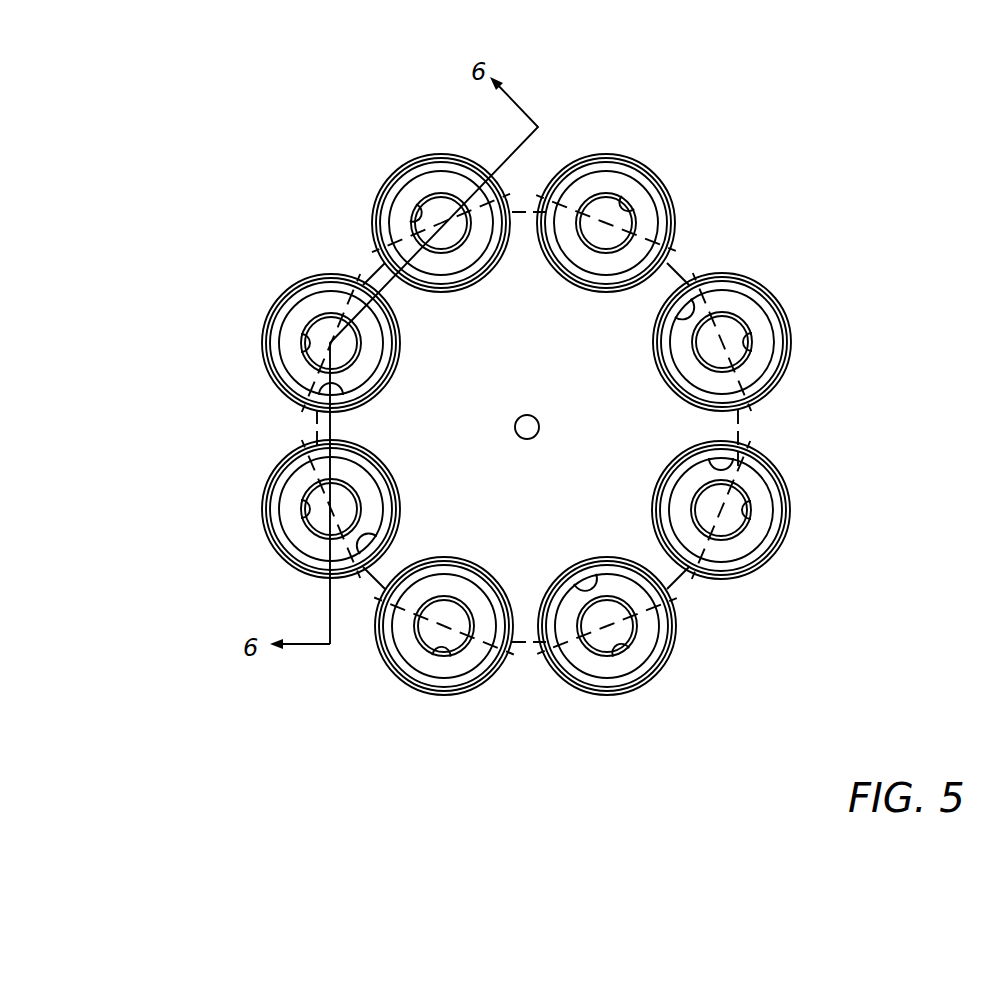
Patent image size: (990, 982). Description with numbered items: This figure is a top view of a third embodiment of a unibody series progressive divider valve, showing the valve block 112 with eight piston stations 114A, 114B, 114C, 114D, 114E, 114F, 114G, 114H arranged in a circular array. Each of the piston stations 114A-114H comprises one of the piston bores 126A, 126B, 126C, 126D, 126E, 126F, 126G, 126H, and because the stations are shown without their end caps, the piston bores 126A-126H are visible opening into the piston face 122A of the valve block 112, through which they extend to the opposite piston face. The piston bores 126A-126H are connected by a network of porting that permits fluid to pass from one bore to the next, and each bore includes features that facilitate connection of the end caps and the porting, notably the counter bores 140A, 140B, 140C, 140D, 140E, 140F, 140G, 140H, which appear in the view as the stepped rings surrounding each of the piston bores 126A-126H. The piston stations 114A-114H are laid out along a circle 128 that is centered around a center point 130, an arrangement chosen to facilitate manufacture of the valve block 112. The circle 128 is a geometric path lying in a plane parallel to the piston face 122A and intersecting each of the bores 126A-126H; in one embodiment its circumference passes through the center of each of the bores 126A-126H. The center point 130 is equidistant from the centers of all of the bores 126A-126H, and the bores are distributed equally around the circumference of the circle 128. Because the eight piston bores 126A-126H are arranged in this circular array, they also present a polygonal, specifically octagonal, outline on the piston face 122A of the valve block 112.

The valve block 112 is at (337, 680).
The piston station 114A is at (282, 566).
The piston station 114B is at (258, 343).
The piston station 114C is at (388, 170).
The piston station 114D is at (665, 177).
The piston station 114E is at (793, 311).
The piston station 114F is at (793, 484).
The piston station 114G is at (685, 633).
The piston station 114H is at (489, 689).
The piston bore 126A is at (315, 528).
The piston bore 126B is at (313, 372).
The piston bore 126C is at (406, 228).
The piston bore 126D is at (627, 207).
The piston bore 126E is at (750, 356).
The piston bore 126F is at (750, 514).
The piston bore 126G is at (618, 648).
The piston bore 126H is at (438, 650).
The counter bore 140A is at (296, 486).
The counter bore 140B is at (302, 312).
The counter bore 140C is at (403, 210).
The counter bore 140D is at (612, 180).
The counter bore 140E is at (748, 372).
The counter bore 140F is at (743, 543).
The counter bore 140G is at (605, 668).
The counter bore 140H is at (393, 641).
The circle 128 is at (667, 263).
The center point 130 is at (533, 413).
The piston face 122A is at (557, 508).